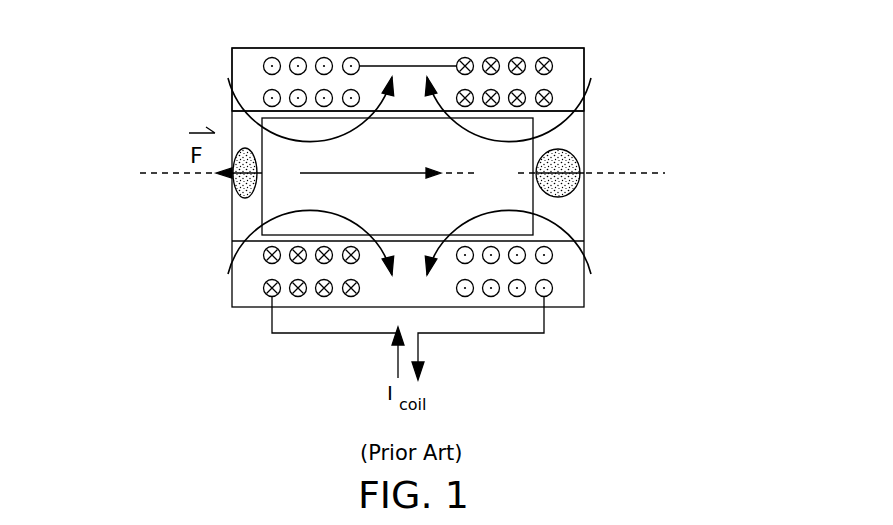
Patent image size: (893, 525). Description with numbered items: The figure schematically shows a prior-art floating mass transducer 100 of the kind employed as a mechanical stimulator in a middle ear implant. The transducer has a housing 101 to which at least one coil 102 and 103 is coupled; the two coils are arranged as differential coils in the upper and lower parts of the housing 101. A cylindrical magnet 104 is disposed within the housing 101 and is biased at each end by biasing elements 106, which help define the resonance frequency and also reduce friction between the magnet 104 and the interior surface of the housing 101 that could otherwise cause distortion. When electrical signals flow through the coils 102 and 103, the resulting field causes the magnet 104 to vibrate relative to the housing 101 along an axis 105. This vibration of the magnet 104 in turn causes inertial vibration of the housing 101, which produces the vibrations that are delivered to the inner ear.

The floating mass transducer 100 is at (143, 327).
The housing 101 is at (245, 48).
The coil 102 is at (270, 57).
The coil 103 is at (540, 57).
The magnet 104 is at (425, 214).
The axis 105 is at (628, 172).
The biasing elements 106 is at (234, 193).